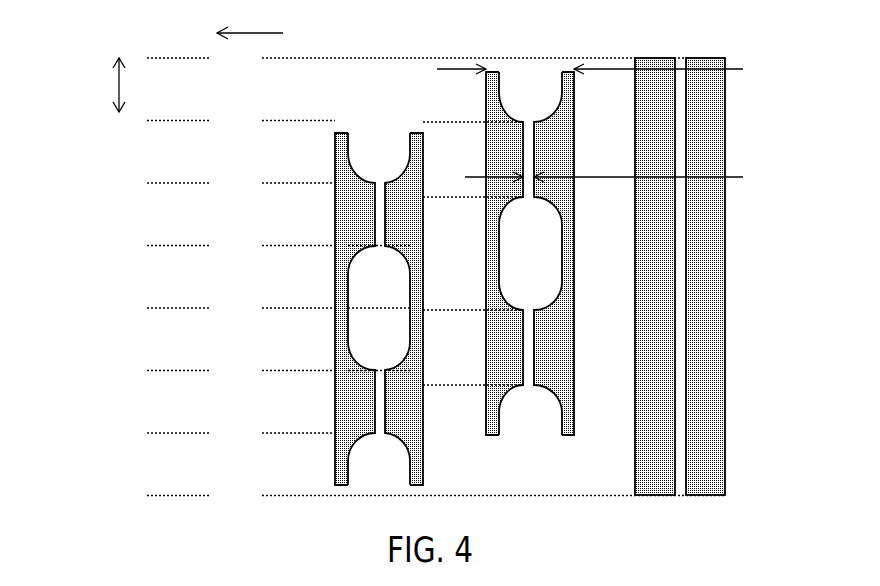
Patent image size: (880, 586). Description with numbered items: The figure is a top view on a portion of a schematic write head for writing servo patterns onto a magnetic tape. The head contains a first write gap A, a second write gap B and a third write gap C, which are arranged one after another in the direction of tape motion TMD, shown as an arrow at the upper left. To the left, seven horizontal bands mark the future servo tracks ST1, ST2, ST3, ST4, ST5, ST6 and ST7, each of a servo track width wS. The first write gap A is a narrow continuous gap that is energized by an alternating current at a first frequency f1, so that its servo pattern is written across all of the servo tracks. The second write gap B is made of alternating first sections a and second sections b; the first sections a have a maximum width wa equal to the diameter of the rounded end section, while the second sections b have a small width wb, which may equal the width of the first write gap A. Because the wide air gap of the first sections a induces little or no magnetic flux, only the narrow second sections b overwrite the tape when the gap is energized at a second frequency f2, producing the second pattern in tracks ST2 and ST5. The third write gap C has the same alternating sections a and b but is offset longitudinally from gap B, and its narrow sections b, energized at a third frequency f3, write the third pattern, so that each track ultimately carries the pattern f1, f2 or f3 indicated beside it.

The first write gap A is at (680, 261).
The second write gap B is at (530, 231).
The third write gap C is at (379, 256).
The first sections a is at (378, 472).
The second sections b is at (382, 393).
The maximum width of first sections wa is at (618, 68).
The width of second sections wb is at (633, 176).
The servo track width wS is at (100, 85).
The direction of tape motion TMD is at (254, 19).
The servo track ST1 is at (177, 80).
The servo track ST2 is at (177, 143).
The servo track ST3 is at (177, 205).
The servo track ST4 is at (177, 268).
The servo track ST5 is at (177, 330).
The servo track ST6 is at (177, 393).
The servo track ST7 is at (177, 464).
The first frequency f1 is at (299, 272).
The second frequency f2 is at (299, 241).
The third frequency f3 is at (299, 303).